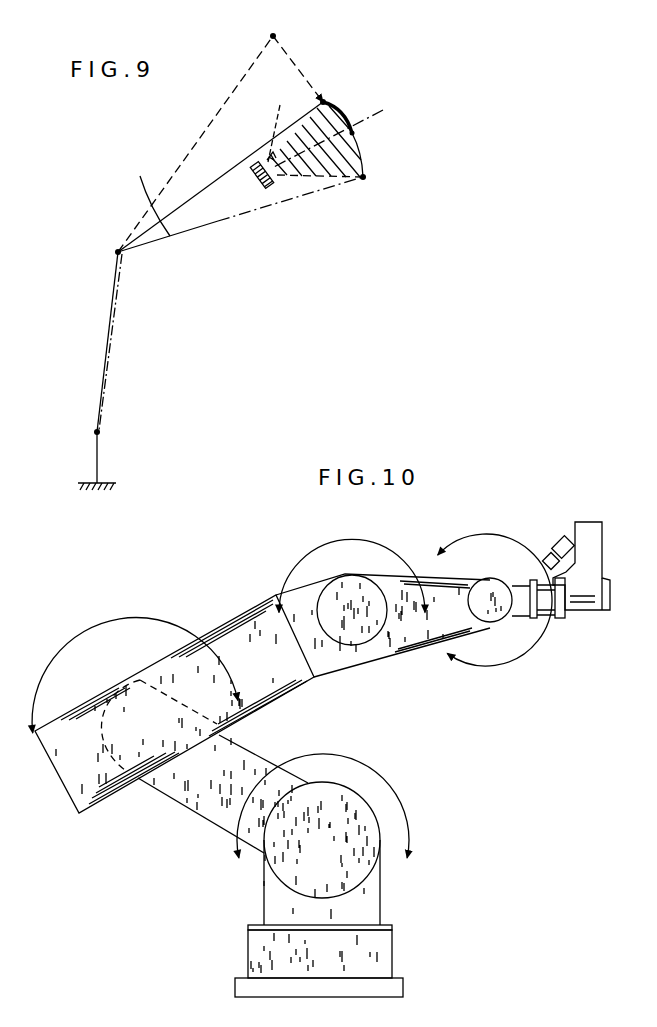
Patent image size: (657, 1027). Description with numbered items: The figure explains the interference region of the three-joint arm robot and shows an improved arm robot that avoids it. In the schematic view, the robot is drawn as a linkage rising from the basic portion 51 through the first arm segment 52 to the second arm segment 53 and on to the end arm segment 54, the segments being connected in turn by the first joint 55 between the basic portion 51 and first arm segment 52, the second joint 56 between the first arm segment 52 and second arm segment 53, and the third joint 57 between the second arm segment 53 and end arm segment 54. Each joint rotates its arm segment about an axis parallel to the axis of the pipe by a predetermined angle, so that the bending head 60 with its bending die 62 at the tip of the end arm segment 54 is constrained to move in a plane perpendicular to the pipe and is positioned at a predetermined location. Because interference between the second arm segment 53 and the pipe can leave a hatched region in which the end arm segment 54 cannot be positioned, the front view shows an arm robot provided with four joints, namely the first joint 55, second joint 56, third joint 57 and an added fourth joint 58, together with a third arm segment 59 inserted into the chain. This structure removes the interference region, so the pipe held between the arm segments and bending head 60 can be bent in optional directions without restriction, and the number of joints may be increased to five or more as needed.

In FIG. 9, the basic portion 51 is at (98, 462).
In FIG. 10, the basic portion 51 is at (347, 905).
In FIG. 9, the first arm segment 52 is at (112, 286).
In FIG. 10, the first arm segment 52 is at (198, 780).
In FIG. 9, the second arm segment 53 is at (180, 161).
In FIG. 10, the second arm segment 53 is at (237, 692).
In FIG. 9, the end arm segment 54 is at (301, 163).
In FIG. 10, the end arm segment 54 is at (521, 608).
In FIG. 9, the first joint 55 is at (96, 432).
In FIG. 10, the first joint 55 is at (350, 845).
In FIG. 9, the second joint 56 is at (117, 251).
In FIG. 10, the second joint 56 is at (112, 760).
In FIG. 9, the third joint 57 is at (365, 176).
In FIG. 10, the third joint 57 is at (487, 605).
In FIG. 9, the fourth joint 58 is at (276, 35).
In FIG. 10, the fourth joint 58 is at (352, 625).
In FIG. 9, the third arm segment 59 is at (314, 80).
In FIG. 10, the third arm segment 59 is at (417, 628).
In FIG. 10, the bending head 60 is at (588, 523).
In FIG. 9, the bending die 62 is at (256, 184).